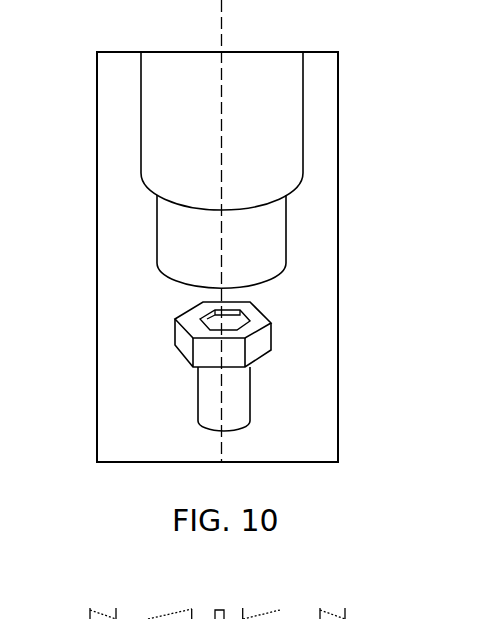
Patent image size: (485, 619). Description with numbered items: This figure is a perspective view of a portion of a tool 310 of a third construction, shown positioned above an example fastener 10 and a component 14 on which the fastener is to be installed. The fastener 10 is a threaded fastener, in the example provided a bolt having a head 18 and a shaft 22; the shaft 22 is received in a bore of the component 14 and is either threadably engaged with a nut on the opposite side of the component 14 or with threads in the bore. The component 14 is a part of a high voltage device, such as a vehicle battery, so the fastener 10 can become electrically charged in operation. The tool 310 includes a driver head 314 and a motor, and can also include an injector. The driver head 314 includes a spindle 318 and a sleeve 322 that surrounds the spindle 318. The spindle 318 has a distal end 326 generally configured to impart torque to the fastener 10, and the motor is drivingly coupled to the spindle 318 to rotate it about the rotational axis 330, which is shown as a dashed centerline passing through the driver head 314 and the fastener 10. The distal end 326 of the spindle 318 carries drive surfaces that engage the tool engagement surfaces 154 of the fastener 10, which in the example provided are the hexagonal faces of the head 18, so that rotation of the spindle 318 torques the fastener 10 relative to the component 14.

The fastener 10 is at (223, 381).
The component 14 is at (315, 428).
The head 18 is at (223, 339).
The shaft 22 is at (208, 412).
The tool engagement surfaces 154 is at (253, 352).
The tool 310 is at (158, 187).
The driver head 314 is at (160, 187).
The spindle 318 is at (154, 259).
The sleeve 322 is at (158, 177).
The distal end 326 is at (177, 282).
The rotational axis 330 is at (221, 33).